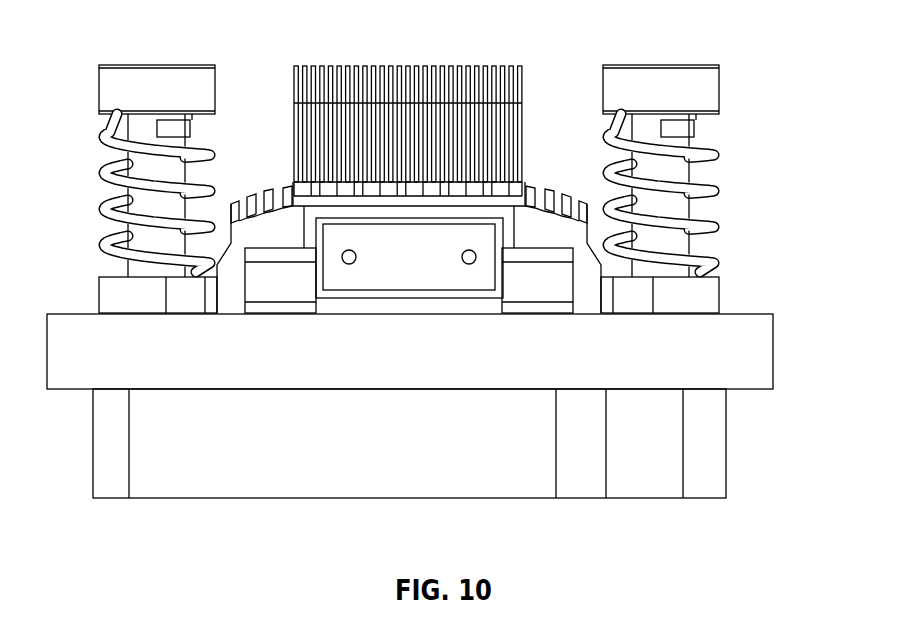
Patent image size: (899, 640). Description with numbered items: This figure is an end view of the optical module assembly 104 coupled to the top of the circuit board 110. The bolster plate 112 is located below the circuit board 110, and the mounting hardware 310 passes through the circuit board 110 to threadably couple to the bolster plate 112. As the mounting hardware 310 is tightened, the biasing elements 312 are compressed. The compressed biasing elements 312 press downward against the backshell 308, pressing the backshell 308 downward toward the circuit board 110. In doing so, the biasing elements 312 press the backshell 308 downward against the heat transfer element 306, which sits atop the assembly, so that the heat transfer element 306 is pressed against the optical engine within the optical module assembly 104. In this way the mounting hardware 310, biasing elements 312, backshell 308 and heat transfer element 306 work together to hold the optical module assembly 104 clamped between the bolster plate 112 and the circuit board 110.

The optical module assembly 104 is at (772, 101).
The circuit board 110 is at (753, 347).
The bolster plate 112 is at (715, 443).
The heat transfer element 306 is at (485, 73).
The backshell 308 is at (540, 227).
The mounting hardware 310 is at (113, 95).
The biasing elements 312 is at (115, 182).